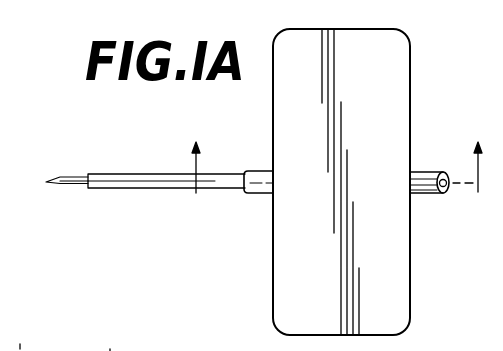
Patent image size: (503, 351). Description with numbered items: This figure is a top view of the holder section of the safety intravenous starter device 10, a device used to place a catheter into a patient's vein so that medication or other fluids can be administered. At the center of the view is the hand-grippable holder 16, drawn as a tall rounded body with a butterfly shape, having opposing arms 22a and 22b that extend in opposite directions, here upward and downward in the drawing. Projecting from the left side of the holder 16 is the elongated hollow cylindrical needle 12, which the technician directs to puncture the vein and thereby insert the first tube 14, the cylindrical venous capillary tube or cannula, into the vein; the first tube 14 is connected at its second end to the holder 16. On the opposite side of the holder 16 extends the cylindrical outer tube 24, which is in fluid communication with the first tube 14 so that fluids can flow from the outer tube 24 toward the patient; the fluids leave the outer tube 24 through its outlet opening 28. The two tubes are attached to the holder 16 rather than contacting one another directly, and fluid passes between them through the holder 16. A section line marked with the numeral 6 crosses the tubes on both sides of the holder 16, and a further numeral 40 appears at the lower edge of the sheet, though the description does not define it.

The safety intravenous starter device 10 is at (252, 232).
The needle 12 is at (65, 184).
The first tube 14 is at (128, 181).
The holder 16 is at (272, 298).
The arm 22a is at (390, 90).
The arm 22b is at (390, 308).
The outer tube 24 is at (424, 172).
The section line 6 is at (338, 151).
The outlet opening 28 is at (23, 328).
The element 40 is at (110, 342).